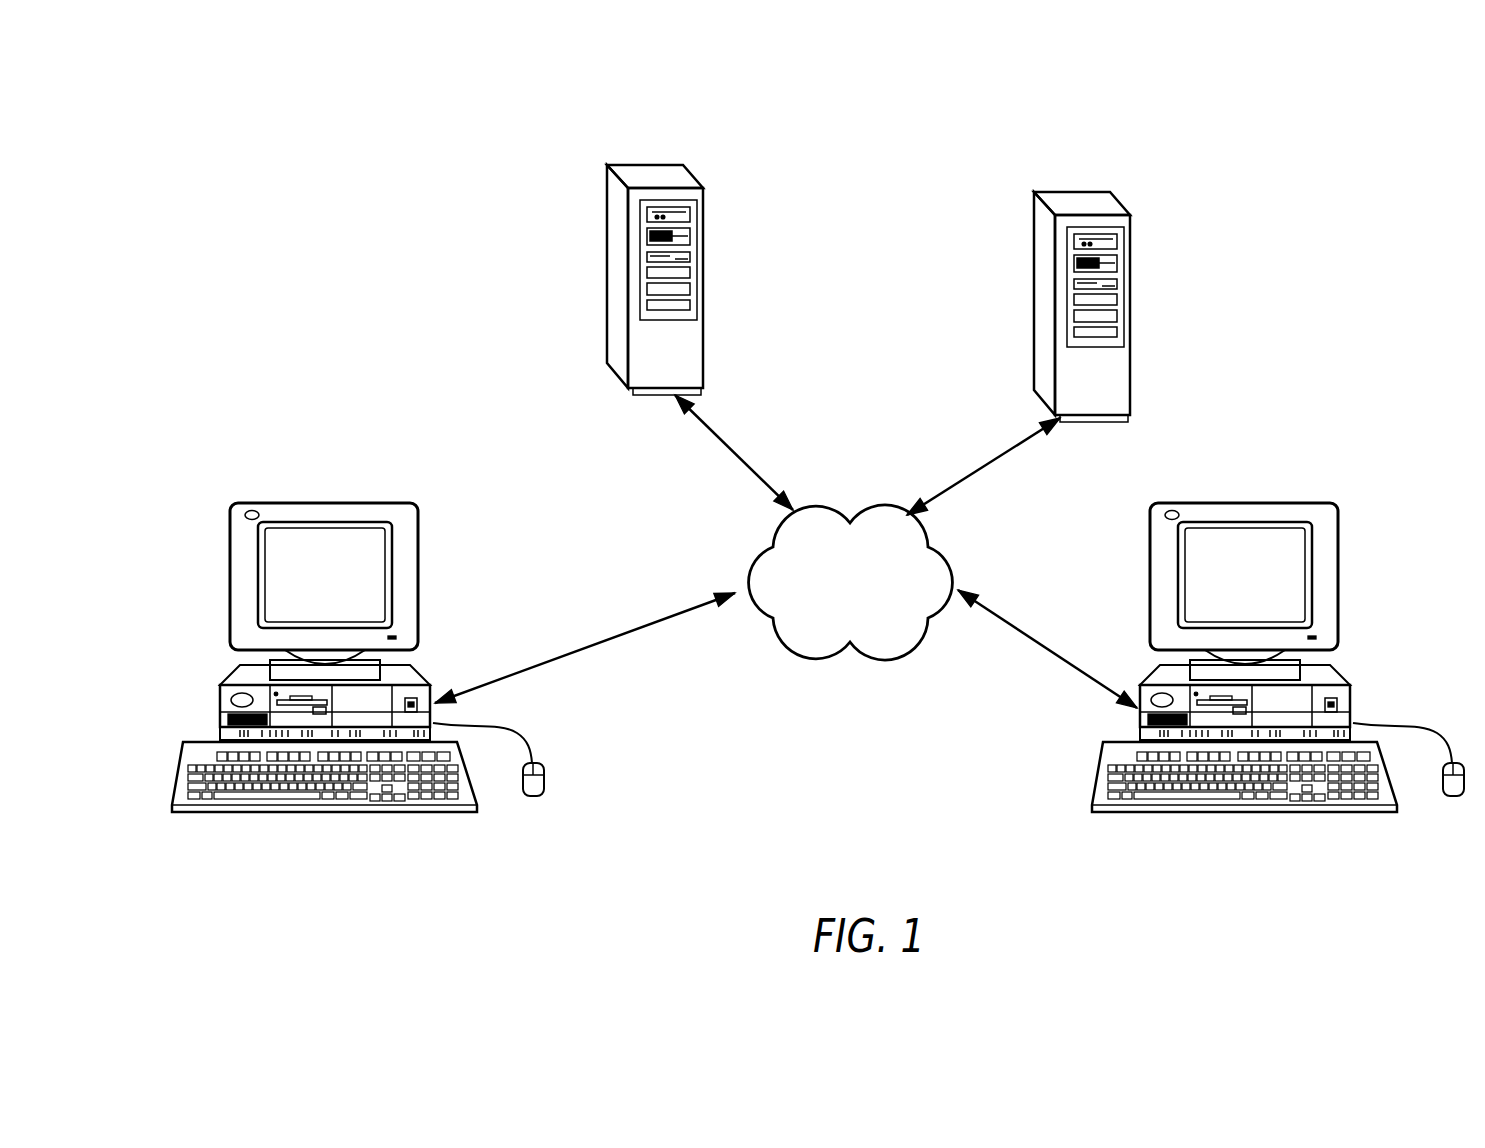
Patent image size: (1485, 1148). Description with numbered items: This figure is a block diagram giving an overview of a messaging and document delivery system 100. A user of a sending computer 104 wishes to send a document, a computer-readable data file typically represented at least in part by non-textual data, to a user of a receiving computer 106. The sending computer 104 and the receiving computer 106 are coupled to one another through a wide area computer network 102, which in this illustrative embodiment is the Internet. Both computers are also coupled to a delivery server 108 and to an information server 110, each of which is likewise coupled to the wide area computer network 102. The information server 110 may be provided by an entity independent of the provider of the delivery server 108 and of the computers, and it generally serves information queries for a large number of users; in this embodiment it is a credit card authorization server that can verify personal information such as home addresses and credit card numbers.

The messaging and document delivery system 100 is at (1278, 391).
The wide area computer network 102 is at (851, 582).
The sending computer 104 is at (358, 690).
The receiving computer 106 is at (1278, 688).
The delivery server 108 is at (673, 257).
The information server 110 is at (1063, 270).